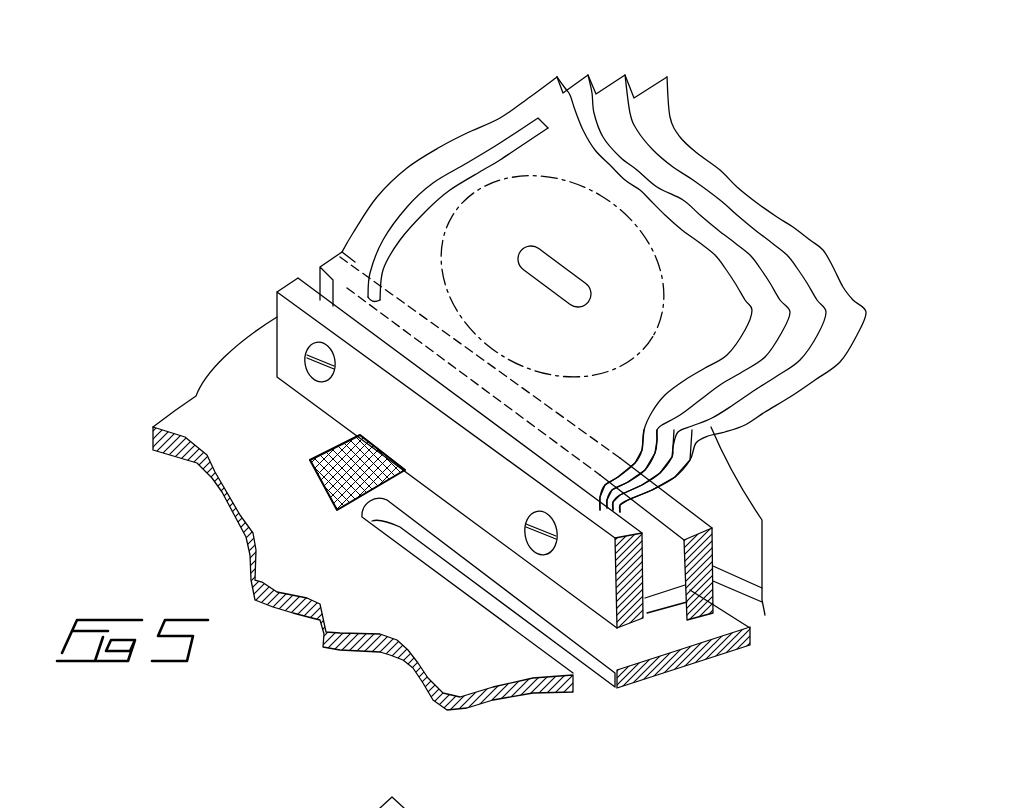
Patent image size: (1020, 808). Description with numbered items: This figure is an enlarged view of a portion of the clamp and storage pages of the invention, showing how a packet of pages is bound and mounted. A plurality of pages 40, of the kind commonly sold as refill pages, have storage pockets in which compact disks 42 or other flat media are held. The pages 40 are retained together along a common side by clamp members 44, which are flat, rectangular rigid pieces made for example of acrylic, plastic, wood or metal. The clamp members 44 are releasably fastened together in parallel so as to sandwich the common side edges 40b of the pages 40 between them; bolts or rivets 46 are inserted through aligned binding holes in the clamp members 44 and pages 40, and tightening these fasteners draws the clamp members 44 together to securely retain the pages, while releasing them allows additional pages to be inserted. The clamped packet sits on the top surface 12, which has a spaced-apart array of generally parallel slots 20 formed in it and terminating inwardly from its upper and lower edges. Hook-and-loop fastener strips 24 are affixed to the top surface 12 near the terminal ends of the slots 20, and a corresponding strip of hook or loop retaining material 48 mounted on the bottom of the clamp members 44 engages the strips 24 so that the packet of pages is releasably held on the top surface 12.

The top surface 12 is at (222, 392).
The slots 20 is at (583, 672).
The hook-and-loop fastener strips 24 is at (317, 483).
The pages 40 is at (622, 93).
The common side edges 40b is at (622, 512).
The compact disks 42 is at (512, 200).
The clamp members 44 is at (294, 320).
The bolts or rivets 46 is at (320, 378).
The hook or loop retaining material 48 is at (378, 443).